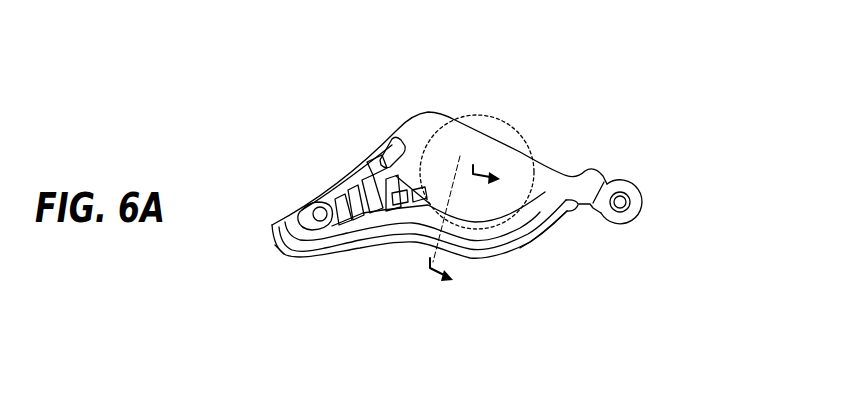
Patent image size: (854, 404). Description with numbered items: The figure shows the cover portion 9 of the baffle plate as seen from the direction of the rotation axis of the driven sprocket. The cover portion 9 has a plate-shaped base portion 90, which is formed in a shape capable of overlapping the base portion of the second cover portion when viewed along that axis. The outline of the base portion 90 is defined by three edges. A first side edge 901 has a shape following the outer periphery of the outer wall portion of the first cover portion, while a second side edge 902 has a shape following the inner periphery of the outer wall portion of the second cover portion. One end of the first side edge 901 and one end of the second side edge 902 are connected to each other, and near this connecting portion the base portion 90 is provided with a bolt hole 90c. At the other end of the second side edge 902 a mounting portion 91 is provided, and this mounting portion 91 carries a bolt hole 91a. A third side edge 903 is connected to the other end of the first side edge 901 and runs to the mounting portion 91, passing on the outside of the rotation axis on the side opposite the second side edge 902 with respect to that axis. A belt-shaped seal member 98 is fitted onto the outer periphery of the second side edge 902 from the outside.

The cover portion 9 is at (555, 110).
The base portion 90 is at (432, 113).
The first side edge 901 is at (328, 196).
The bolt hole 90c is at (308, 203).
The third side edge 903 is at (505, 132).
The seal member 98 is at (310, 263).
The second side edge 902 is at (572, 216).
The mounting portion 91 is at (614, 182).
The bolt hole 91a is at (641, 204).